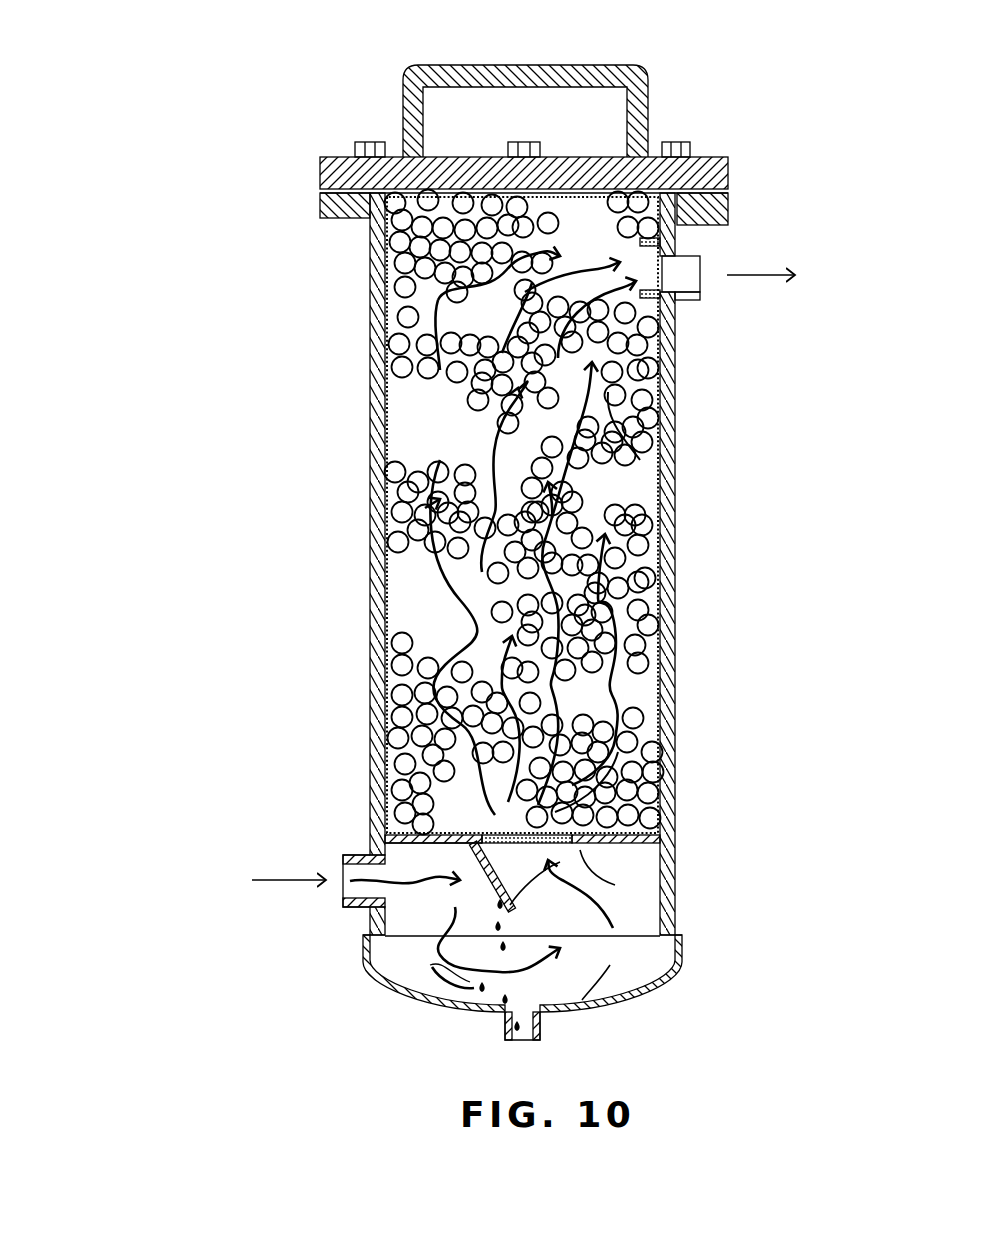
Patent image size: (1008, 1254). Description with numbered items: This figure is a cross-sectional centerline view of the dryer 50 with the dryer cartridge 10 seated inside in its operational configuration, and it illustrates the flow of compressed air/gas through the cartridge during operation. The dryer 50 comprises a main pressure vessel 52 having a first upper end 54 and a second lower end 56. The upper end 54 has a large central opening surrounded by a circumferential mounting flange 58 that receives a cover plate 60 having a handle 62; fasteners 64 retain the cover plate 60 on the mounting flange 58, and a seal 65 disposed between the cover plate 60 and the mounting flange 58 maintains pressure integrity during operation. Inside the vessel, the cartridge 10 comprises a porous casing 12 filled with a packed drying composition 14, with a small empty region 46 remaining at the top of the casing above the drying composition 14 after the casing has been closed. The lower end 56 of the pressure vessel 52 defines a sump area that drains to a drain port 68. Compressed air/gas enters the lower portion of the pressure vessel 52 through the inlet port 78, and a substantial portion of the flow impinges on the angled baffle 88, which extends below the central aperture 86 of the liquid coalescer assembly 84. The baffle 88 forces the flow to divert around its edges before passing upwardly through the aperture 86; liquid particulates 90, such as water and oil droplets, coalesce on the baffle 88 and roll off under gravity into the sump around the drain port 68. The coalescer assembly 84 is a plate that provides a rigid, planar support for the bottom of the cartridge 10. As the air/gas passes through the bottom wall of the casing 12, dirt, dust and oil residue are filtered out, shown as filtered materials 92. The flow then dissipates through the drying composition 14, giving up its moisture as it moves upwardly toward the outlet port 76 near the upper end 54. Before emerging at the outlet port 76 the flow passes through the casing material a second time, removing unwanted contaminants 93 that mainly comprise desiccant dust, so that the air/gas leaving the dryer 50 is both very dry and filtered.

The dryer cartridge 10 is at (370, 420).
The casing 12 is at (672, 495).
The drying composition 14 is at (672, 450).
The empty region 46 is at (497, 190).
The dryer 50 is at (98, 275).
The main pressure vessel 52 is at (325, 585).
The first (upper) end 54 is at (285, 195).
The second (lower) end 56 is at (713, 959).
The circumferential mounting flange 58 is at (323, 218).
The cover plate 60 is at (320, 168).
The handle 62 is at (580, 65).
The fasteners 64 is at (370, 143).
The seal 65 is at (728, 192).
The drain port 68 is at (540, 1030).
The outlet port 76 is at (700, 295).
The inlet port 78 is at (351, 855).
The liquid coalescer assembly 84 is at (650, 843).
The central aperture 86 is at (545, 843).
The angled baffle 88 is at (485, 843).
The liquid particulates 90 is at (588, 984).
The filtered materials 92 is at (512, 862).
The unwanted contaminants 93 is at (662, 241).